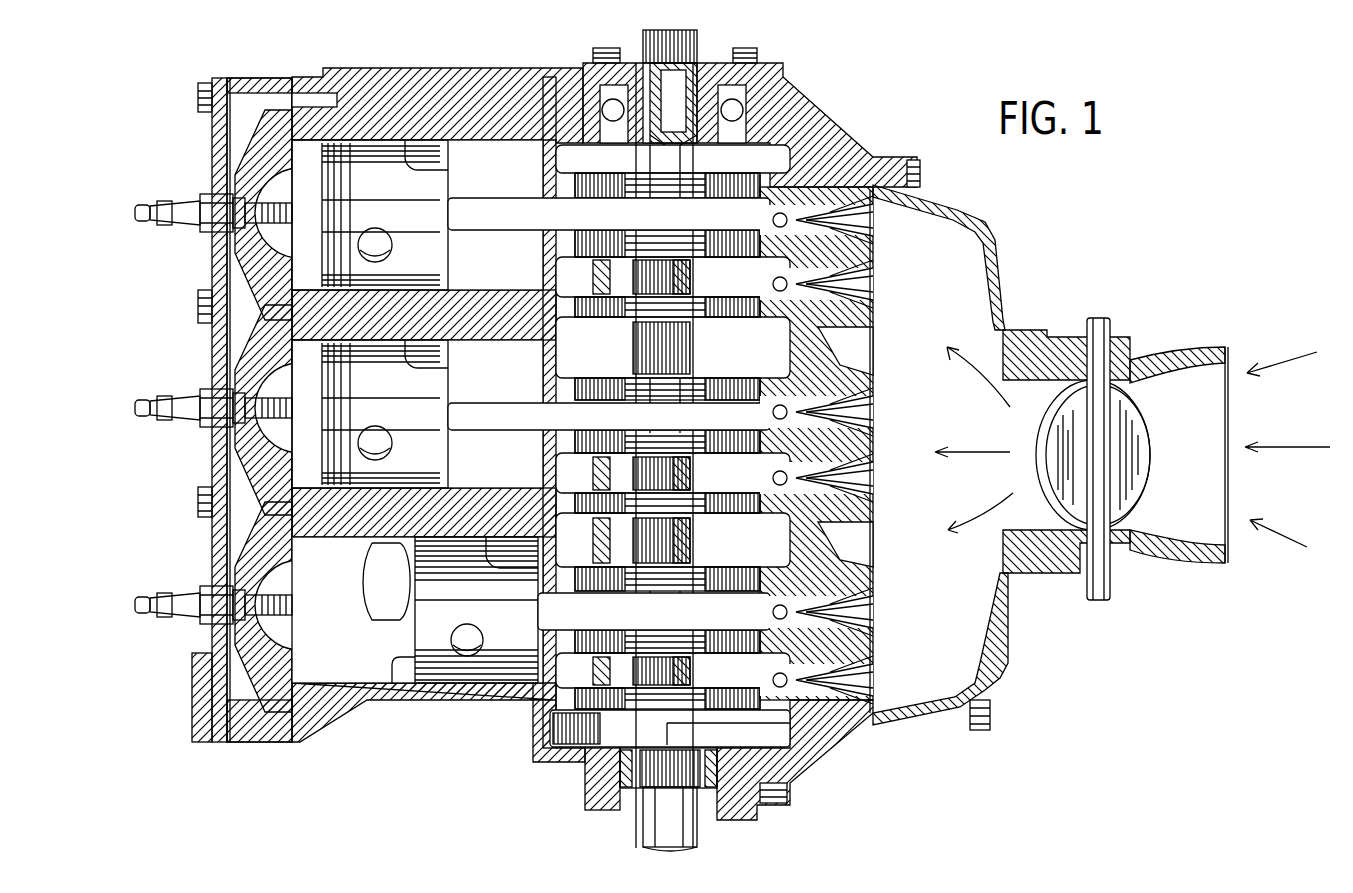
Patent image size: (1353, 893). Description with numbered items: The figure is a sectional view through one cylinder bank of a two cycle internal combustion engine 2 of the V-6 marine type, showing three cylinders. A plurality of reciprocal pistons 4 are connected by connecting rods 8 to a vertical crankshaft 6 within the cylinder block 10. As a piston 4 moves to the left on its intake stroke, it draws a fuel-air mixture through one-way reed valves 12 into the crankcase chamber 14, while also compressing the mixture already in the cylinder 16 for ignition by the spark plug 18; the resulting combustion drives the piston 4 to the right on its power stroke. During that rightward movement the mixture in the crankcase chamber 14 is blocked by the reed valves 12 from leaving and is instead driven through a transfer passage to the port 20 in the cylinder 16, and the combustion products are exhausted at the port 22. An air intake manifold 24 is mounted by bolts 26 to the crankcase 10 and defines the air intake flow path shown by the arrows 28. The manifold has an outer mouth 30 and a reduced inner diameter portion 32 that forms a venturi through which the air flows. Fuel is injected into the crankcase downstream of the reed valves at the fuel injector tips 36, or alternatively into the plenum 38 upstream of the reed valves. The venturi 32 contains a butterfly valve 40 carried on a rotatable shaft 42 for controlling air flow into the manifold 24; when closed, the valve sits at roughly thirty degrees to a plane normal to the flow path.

The two cycle internal combustion engine 2 is at (152, 764).
The reciprocal piston 4 is at (500, 660).
The vertical crankshaft 6 is at (645, 826).
The connecting rod 8 is at (560, 612).
The cylinder block 10 is at (798, 132).
The one-way reed valve 12 is at (875, 612).
The crankcase chamber 14 is at (875, 572).
The cylinder 16 is at (310, 668).
The spark plug 18 is at (188, 617).
The port 20 is at (392, 668).
The exhaust port 22 is at (362, 596).
The air intake manifold 24 is at (992, 243).
The bolt 26 is at (924, 168).
The air intake flow path 28 is at (982, 452).
The outer mouth 30 is at (1226, 347).
The reduced inner diameter portion 32 is at (1147, 370).
The fuel injector tip 36 is at (790, 692).
The plenum 38 is at (965, 680).
The butterfly valve 40 is at (1140, 430).
The rotatable shaft 42 is at (1108, 320).